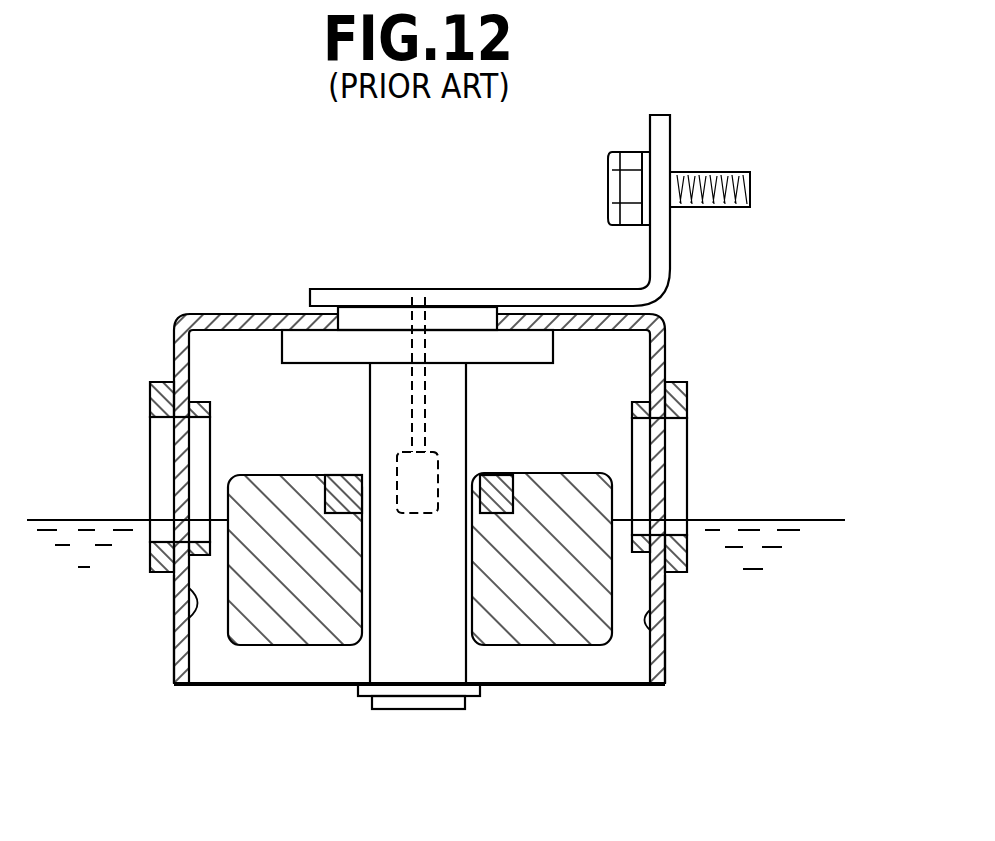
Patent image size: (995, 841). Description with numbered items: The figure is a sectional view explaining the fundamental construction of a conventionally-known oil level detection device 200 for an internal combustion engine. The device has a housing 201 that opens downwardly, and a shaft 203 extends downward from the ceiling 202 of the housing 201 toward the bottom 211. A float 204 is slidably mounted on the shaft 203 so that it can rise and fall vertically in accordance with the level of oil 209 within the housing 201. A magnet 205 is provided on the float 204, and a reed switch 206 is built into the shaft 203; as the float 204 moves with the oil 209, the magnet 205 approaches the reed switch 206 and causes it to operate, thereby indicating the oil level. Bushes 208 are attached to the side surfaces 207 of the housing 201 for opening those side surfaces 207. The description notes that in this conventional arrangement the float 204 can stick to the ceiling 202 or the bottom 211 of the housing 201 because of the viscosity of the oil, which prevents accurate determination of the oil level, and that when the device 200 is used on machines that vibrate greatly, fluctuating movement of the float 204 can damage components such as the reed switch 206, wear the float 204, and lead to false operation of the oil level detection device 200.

The oil level detection device 200 is at (212, 115).
The housing 201 is at (220, 307).
The ceiling 202 is at (325, 362).
The shaft 203 is at (466, 372).
The float 204 is at (552, 465).
The magnet 205 is at (500, 475).
The reed switch 206 is at (438, 465).
The side surfaces 207 is at (177, 630).
The bushes 208 is at (157, 575).
The oil 209 is at (782, 520).
The bottom 211 is at (475, 683).